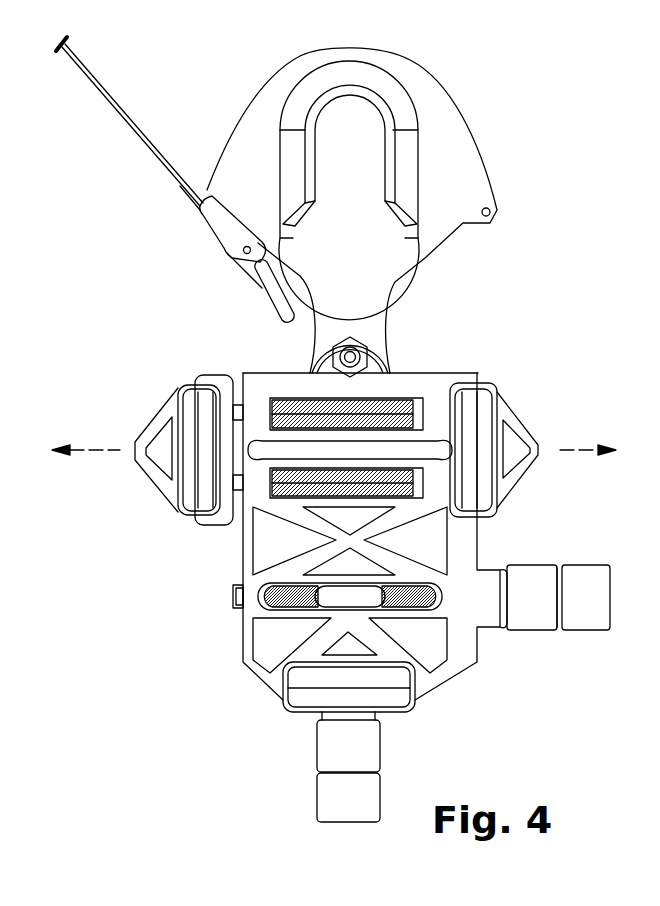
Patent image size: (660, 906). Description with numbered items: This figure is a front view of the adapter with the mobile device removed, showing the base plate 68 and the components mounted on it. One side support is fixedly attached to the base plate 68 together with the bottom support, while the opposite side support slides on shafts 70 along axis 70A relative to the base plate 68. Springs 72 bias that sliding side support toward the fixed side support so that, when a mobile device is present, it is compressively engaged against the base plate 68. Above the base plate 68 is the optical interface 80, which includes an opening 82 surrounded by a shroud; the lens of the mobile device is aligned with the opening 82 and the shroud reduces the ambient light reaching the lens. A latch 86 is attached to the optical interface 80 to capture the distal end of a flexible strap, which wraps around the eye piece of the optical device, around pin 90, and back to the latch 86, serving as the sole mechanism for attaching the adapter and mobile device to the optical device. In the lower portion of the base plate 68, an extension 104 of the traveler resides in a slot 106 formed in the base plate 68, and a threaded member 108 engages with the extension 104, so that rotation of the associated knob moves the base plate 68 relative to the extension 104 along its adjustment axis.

The base plate 68 is at (441, 383).
The shafts 70 is at (305, 412).
The axis 70A is at (103, 450).
The springs 72 is at (370, 477).
The optical interface 80 is at (442, 135).
The opening 82 is at (356, 180).
The latch 86 is at (268, 290).
The pin 90 is at (491, 212).
The extension 104 is at (327, 603).
The slot 106 is at (413, 588).
The threaded member 108 is at (246, 612).